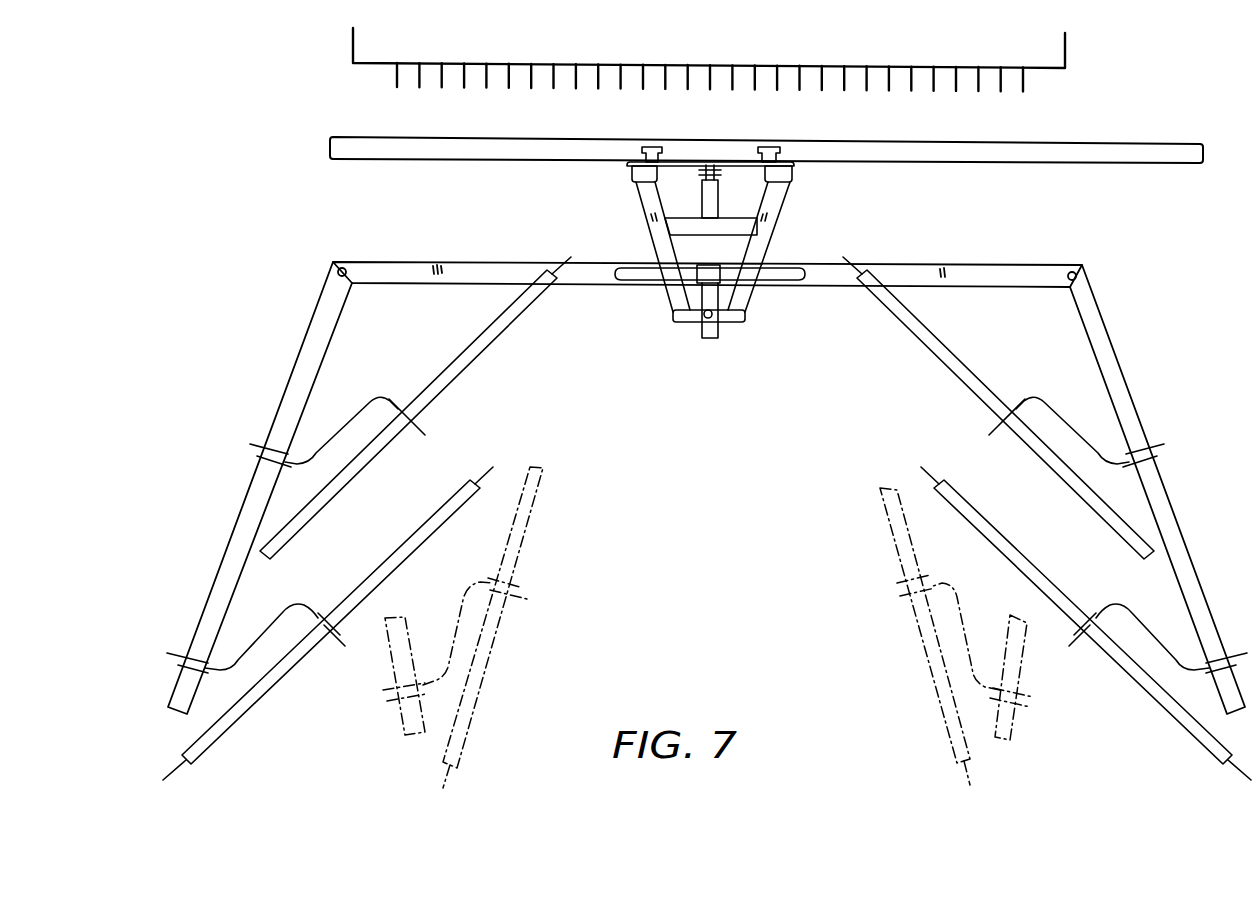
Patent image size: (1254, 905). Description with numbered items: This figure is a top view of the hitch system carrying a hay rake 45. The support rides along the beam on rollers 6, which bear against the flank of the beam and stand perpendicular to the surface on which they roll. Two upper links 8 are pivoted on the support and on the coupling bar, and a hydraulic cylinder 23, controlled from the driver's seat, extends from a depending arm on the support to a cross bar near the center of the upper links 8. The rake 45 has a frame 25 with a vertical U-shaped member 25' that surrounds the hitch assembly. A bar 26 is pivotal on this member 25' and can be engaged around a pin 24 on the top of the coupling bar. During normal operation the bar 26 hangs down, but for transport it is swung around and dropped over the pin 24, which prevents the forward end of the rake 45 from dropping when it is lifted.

The rollers 6 is at (655, 147).
The upper links 8 is at (647, 198).
The hydraulic cylinder 23 is at (712, 196).
The pin 24 is at (707, 316).
The frame 25 is at (1157, 489).
The vertical U-shaped member 25' is at (713, 256).
The bar 26 is at (707, 293).
The hay rake 45 is at (232, 512).